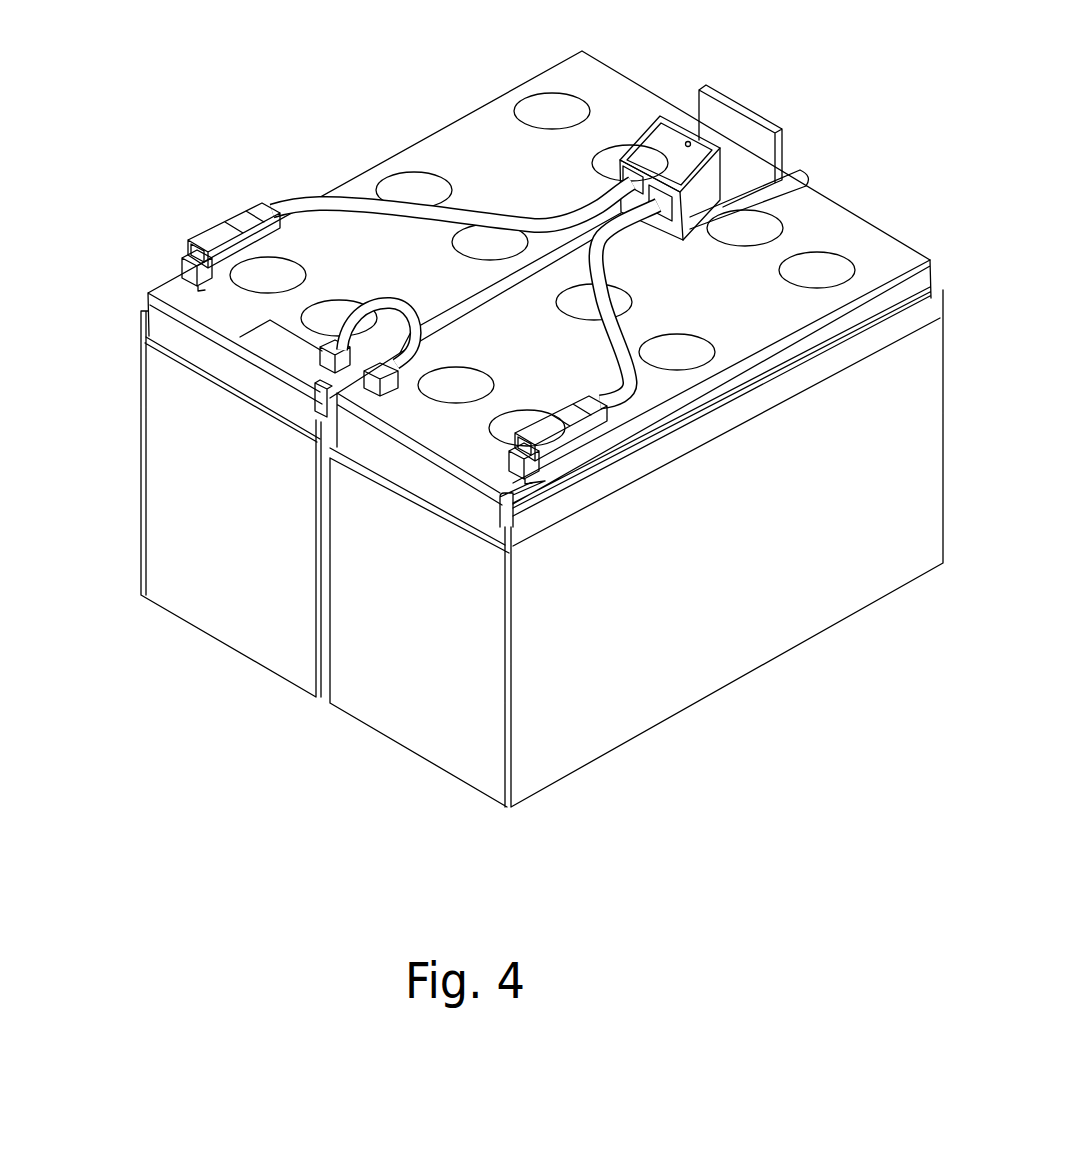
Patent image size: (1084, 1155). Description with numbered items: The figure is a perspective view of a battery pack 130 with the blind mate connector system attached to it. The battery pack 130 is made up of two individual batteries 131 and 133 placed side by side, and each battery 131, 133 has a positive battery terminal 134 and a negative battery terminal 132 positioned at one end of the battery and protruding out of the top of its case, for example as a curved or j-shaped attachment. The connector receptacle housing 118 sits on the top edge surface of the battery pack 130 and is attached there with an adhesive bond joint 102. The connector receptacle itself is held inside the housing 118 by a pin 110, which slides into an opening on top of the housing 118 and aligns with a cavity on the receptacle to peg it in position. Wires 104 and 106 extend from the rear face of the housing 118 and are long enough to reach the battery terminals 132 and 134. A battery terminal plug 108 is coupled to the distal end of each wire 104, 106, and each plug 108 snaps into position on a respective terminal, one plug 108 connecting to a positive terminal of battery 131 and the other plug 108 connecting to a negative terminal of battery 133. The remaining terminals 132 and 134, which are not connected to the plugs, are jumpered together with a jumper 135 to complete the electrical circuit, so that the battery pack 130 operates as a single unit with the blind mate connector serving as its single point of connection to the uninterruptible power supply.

The adhesive bond joint 102 is at (811, 183).
The wire 104 is at (608, 278).
The wire 106 is at (360, 201).
The battery terminal plug 108 is at (203, 237).
The pin 110 is at (684, 140).
The connector receptacle housing 118 is at (693, 116).
The battery pack 130 is at (170, 628).
The battery 131 is at (138, 540).
The negative battery terminal 132 is at (314, 386).
The battery 133 is at (388, 740).
The positive battery terminal 134 is at (165, 281).
The jumper 135 is at (399, 306).